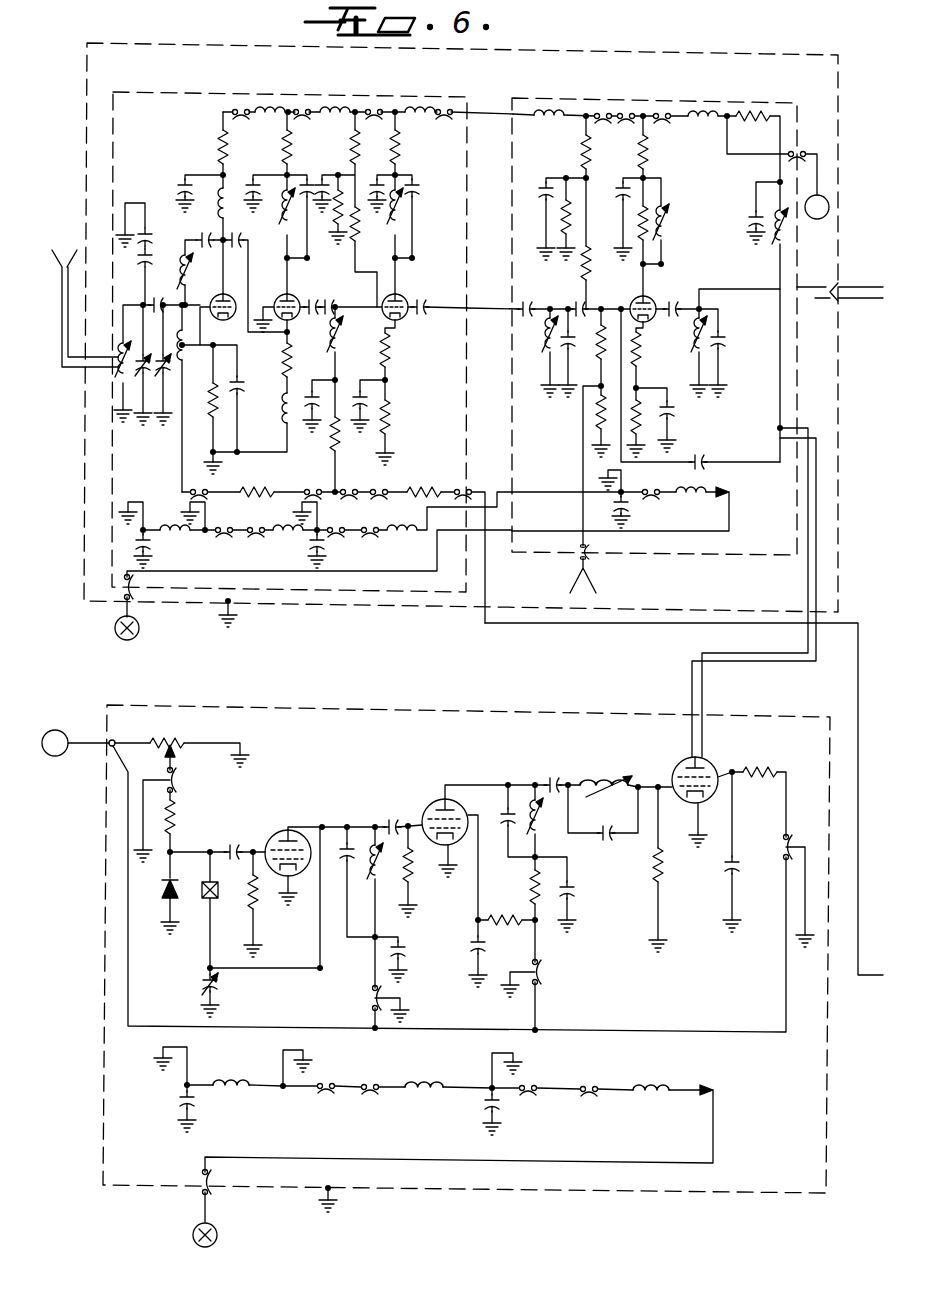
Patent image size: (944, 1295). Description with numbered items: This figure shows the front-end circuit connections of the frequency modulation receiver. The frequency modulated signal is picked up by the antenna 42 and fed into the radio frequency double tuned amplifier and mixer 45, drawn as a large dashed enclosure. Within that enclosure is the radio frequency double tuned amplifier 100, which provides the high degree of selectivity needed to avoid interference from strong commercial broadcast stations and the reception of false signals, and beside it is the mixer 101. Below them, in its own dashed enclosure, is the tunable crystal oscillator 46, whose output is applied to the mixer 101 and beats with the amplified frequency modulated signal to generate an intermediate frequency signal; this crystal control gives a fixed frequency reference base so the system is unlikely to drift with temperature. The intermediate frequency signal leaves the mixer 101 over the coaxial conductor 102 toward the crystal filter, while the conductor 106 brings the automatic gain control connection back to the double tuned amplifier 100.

The radio frequency double tuned amplifier and mixer 45 is at (476, 83).
The radio frequency double tuned amplifier 100 is at (443, 416).
The mixer 101 is at (748, 431).
The antenna 42 is at (52, 250).
The coaxial conductor 102 is at (853, 286).
The tunable crystal oscillator 46 is at (441, 759).
The conductor 106 is at (860, 978).